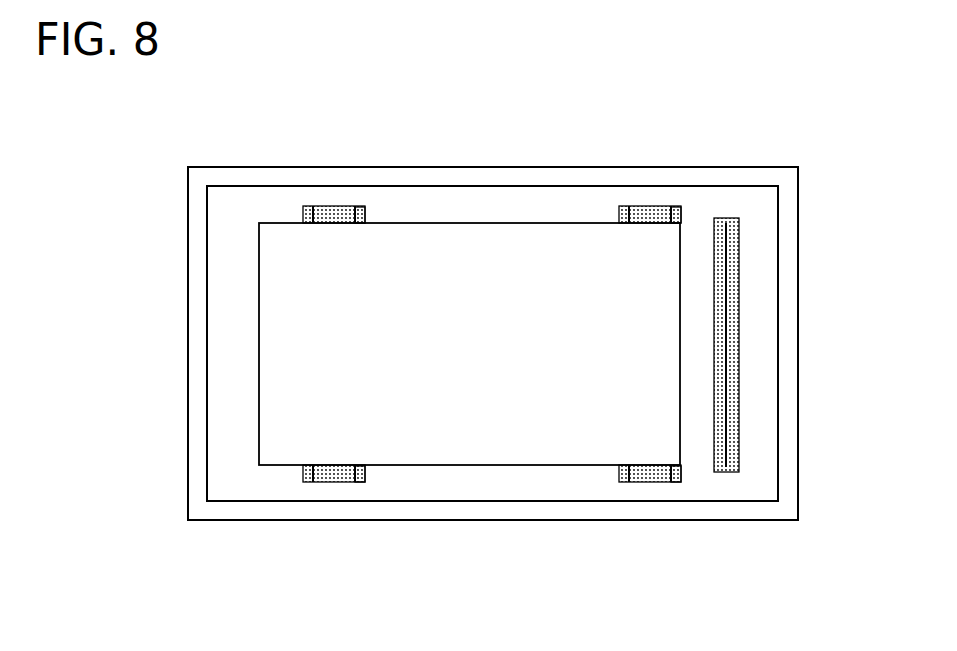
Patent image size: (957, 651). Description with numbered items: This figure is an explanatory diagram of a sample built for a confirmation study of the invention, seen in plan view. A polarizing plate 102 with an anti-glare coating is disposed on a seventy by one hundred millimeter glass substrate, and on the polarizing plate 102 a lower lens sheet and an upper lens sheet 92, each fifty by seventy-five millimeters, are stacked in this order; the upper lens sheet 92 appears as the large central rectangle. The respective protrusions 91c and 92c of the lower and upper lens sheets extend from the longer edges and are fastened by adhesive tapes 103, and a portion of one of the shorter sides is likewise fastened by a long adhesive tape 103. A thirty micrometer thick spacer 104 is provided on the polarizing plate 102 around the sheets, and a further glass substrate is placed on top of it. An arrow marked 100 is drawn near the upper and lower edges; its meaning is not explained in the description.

The upper lens sheet 92 is at (283, 348).
The protrusion of the lower lens sheet 91c is at (363, 214).
The protrusion of the upper lens sheet 92c is at (682, 215).
The direction indicator 100 is at (334, 154).
The polarizing plate 102 is at (226, 263).
The adhesive tape 103 is at (303, 213).
The spacer 104 is at (200, 400).